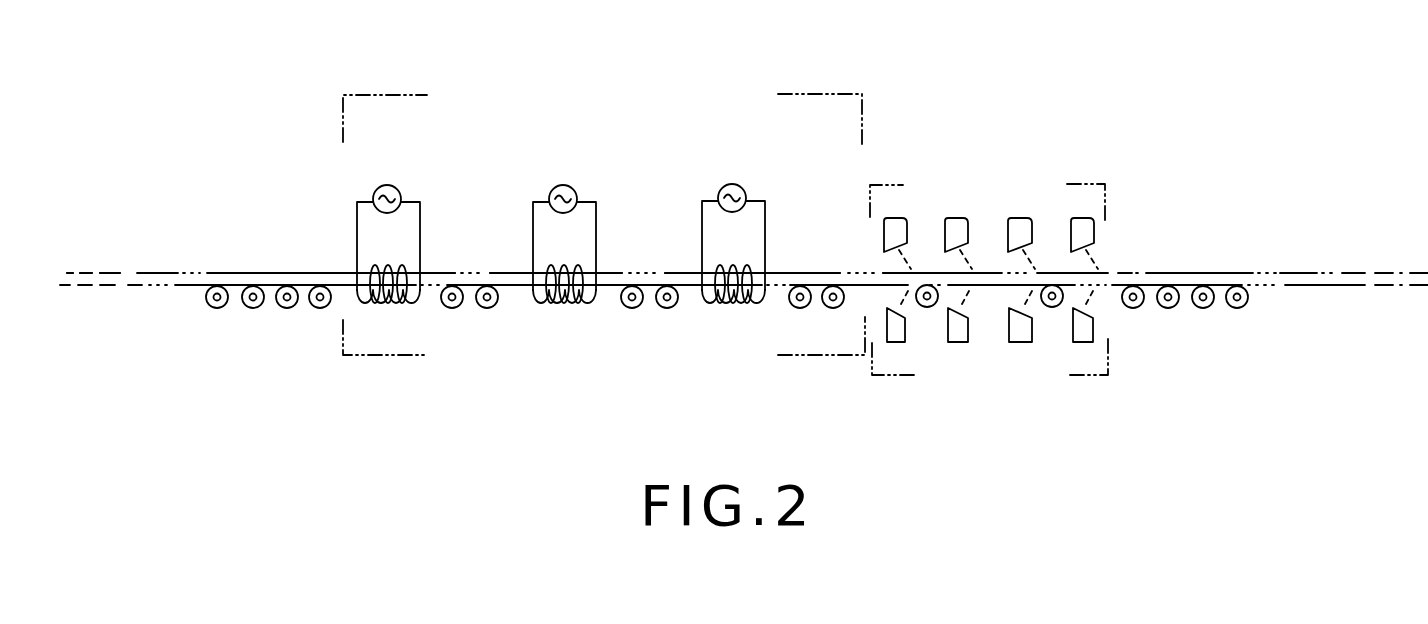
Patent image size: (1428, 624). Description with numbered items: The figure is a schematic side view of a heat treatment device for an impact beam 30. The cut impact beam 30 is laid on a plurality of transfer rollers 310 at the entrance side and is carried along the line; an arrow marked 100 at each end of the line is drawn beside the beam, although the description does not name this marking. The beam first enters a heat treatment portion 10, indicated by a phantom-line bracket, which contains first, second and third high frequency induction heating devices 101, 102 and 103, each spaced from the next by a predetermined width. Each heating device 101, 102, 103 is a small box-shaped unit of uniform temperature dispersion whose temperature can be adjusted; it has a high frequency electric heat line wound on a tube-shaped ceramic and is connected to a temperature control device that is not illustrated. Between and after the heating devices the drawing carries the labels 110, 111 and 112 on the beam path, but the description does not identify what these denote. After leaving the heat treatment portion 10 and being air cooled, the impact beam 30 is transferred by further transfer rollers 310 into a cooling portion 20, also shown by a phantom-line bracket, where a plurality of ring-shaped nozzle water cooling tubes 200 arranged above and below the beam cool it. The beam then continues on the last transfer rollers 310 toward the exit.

The heat treatment portion 10 is at (770, 75).
The cooling portion 20 is at (1078, 180).
The impact beam 30 is at (137, 275).
The strip travel direction 100 is at (134, 253).
The first high frequency induction heating device 101 is at (357, 216).
The second high frequency induction heating device 102 is at (549, 196).
The third high frequency induction heating device 103 is at (708, 197).
The strip portion between first and second coils 110 is at (480, 253).
The strip portion between second and third coils 111 is at (652, 258).
The strip portion downstream of third coil 112 is at (818, 250).
The ring-shaped nozzle water cooling tubes 200 is at (898, 342).
The transfer rollers 310 is at (215, 308).